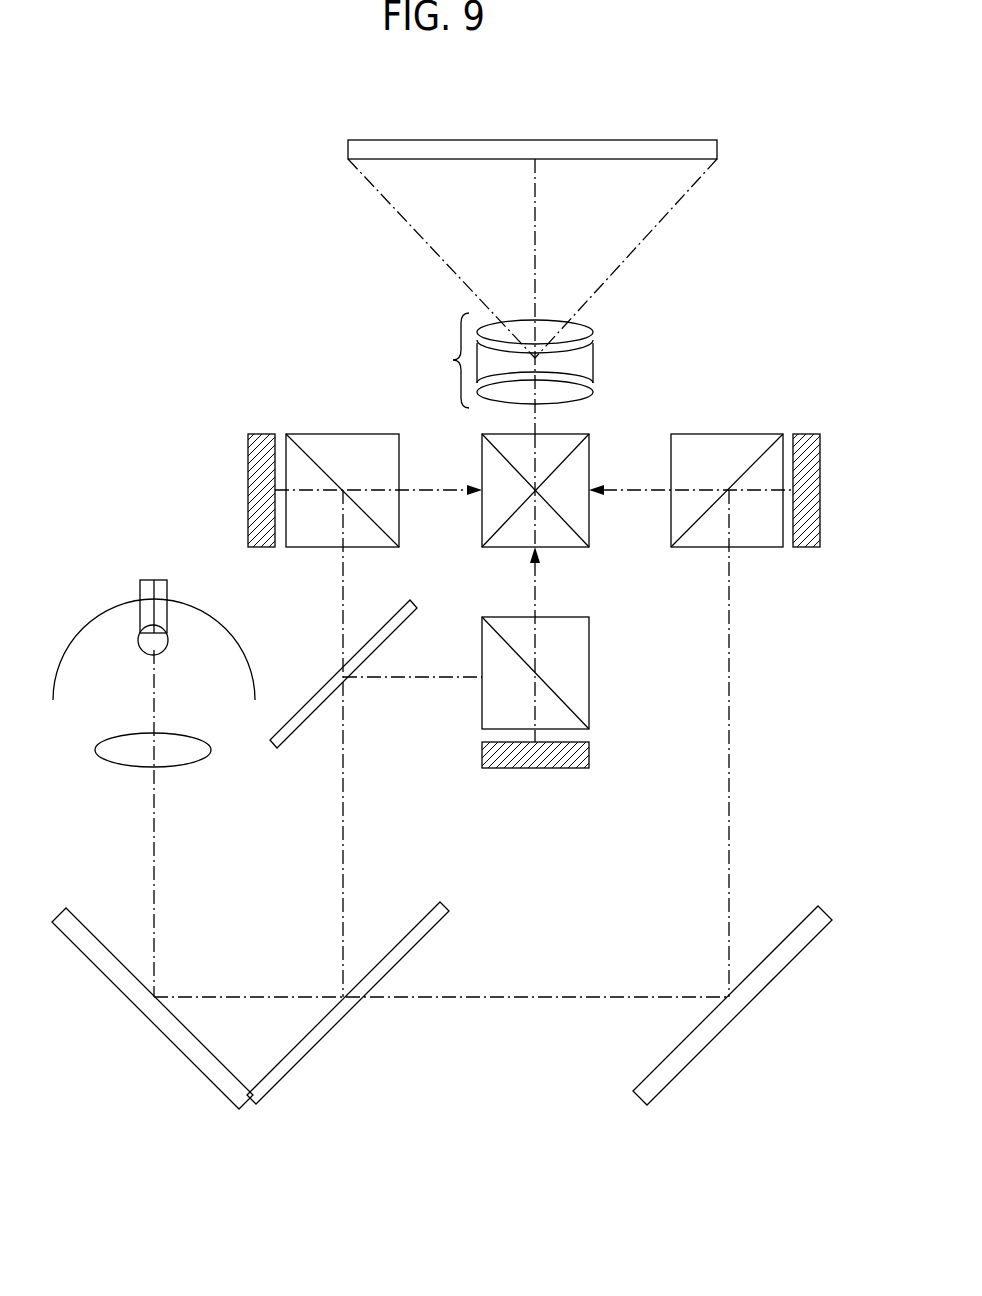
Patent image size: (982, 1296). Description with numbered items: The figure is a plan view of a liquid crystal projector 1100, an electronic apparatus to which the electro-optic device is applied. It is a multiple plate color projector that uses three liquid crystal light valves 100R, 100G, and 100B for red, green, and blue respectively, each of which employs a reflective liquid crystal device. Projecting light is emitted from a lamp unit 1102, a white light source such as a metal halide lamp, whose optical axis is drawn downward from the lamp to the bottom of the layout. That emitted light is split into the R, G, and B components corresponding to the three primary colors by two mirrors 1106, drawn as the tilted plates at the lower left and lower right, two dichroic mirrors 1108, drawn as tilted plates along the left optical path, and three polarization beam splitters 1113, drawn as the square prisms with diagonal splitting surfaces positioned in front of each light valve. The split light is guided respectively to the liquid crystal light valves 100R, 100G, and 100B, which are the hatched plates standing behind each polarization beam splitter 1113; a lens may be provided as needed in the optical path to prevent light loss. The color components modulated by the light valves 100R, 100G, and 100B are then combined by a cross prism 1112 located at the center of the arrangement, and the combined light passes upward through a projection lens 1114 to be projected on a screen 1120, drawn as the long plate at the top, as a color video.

The liquid crystal projector 1100 is at (284, 117).
The screen 1120 is at (658, 142).
The projection lens 1114 is at (452, 360).
The cross prism 1112 is at (560, 440).
The polarization beam splitter 1113 is at (337, 448).
The liquid crystal light valve 100B is at (265, 548).
The liquid crystal light valve 100G is at (550, 768).
The liquid crystal light valve 100R is at (812, 548).
The lamp unit 1102 is at (78, 645).
The dichroic mirror 1108 is at (300, 725).
The mirror 1106 is at (158, 1028).